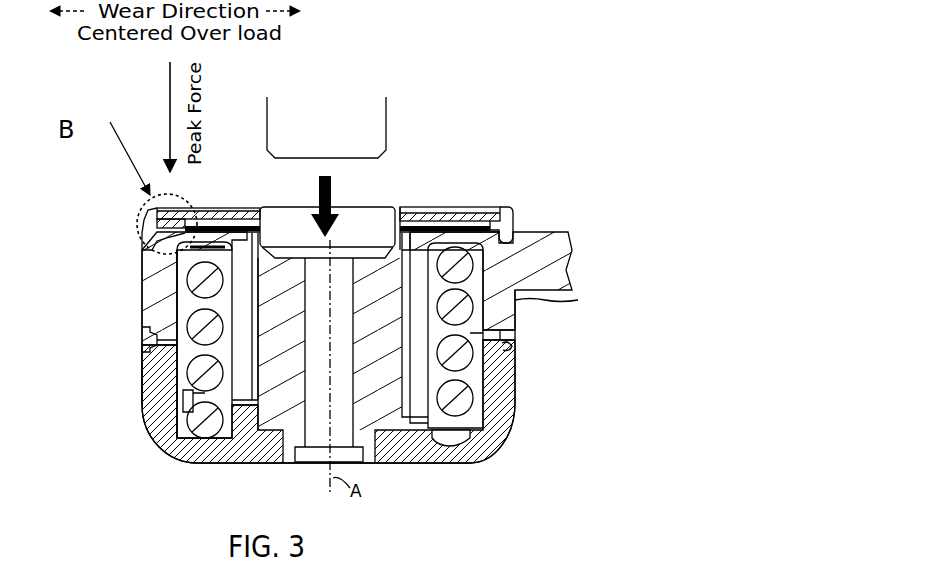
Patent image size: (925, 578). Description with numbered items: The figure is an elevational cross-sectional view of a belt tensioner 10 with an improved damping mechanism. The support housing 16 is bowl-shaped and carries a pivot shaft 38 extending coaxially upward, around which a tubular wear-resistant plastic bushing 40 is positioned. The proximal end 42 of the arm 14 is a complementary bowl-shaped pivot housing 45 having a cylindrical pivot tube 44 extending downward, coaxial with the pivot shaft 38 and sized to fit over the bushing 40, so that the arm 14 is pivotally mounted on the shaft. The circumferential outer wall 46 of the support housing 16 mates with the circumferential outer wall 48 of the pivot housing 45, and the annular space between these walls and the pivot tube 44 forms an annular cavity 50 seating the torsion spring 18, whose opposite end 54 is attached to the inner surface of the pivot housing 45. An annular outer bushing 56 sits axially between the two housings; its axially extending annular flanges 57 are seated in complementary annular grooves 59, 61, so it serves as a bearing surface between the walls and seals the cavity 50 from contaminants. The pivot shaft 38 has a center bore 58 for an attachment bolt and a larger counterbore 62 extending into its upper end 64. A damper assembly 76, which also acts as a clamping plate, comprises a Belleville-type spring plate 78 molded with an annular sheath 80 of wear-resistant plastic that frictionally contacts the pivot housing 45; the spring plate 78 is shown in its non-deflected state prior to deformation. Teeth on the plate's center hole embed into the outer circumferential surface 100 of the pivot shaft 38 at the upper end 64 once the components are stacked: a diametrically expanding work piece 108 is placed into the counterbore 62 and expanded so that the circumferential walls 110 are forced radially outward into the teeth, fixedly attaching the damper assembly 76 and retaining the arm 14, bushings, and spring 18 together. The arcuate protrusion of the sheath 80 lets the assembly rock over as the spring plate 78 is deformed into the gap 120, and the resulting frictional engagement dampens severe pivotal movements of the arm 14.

The belt tensioner 10 is at (578, 160).
The arm 14 is at (556, 245).
The support housing 16 is at (152, 410).
The torsion spring 18 is at (196, 425).
The pivot shaft 38 is at (293, 409).
The bushing 40 is at (407, 384).
The proximal end 42 is at (112, 270).
The pivot tube 44 is at (240, 311).
The pivot housing 45 is at (146, 297).
The circumferential outer wall 46 is at (150, 386).
The circumferential outer wall 48 is at (561, 303).
The annular cavity 50 is at (474, 382).
The opposite end 54 is at (483, 263).
The outer bushing 56 is at (156, 342).
The annular flanges 57 is at (514, 334).
The center bore 58 is at (362, 322).
The annular groove 59 is at (505, 352).
The annular groove 61 is at (522, 318).
The counterbore 62 is at (393, 234).
The upper end 64 is at (266, 212).
The damper assembly 76 is at (490, 211).
The spring plate 78 is at (205, 212).
The annular sheath 80 is at (510, 223).
The outer circumferential surface 100 is at (418, 224).
The work piece 108 is at (392, 121).
The circumferential walls 110 is at (267, 233).
The gap 120 is at (435, 224).